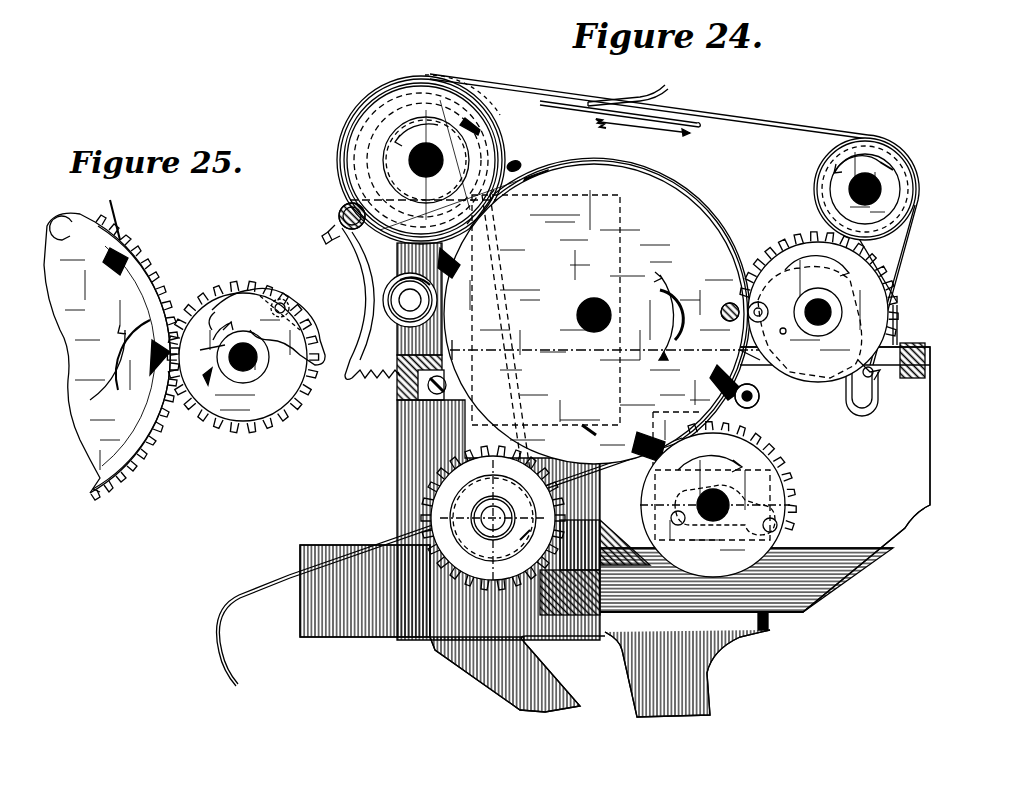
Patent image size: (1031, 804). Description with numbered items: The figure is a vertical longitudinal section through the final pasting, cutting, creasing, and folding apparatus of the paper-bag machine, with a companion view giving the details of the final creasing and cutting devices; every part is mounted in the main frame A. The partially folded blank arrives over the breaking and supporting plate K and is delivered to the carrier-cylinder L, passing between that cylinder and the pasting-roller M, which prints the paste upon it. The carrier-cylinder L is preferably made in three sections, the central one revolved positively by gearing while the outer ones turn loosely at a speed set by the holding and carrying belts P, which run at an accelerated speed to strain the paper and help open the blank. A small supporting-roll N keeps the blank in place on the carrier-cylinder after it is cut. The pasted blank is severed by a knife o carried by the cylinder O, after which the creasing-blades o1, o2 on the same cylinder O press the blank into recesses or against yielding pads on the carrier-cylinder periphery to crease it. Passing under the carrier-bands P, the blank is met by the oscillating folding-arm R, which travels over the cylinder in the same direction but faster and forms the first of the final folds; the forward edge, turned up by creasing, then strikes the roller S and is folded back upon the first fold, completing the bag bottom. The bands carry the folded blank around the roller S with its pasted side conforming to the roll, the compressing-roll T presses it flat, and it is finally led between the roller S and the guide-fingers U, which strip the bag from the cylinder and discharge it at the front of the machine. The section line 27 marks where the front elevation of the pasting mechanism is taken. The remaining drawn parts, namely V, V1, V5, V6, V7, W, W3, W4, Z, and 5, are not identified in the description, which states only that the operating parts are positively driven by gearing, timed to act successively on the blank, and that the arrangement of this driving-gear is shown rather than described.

In FIG. 24, the main frame A is at (615, 480).
In FIG. 24, the holding and carrying belts P is at (722, 105).
In FIG. 24, the breaking and supporting plate K is at (240, 604).
In FIG. 24, the guide-fingers U is at (478, 232).
In FIG. 24, the roller S is at (432, 156).
In FIG. 24, the section line 27 27 is at (410, 160).
In FIG. 24, the oscillating folding-arm R is at (527, 155).
In FIG. 24, the compressing-roll T is at (337, 213).
In FIG. 24, the roller W3 is at (385, 298).
In FIG. 24, the carrier-cylinder L is at (629, 294).
In FIG. 25, the carrier-cylinder L is at (111, 350).
In FIG. 24, the pin W is at (440, 345).
In FIG. 24, the pin 5 is at (589, 432).
In FIG. 24, the pulley Z is at (865, 189).
In FIG. 24, the gear V1 is at (800, 245).
In FIG. 24, the cylinder O is at (805, 323).
In FIG. 25, the cylinder O is at (248, 353).
In FIG. 24, the knife o is at (733, 325).
In FIG. 25, the knife o is at (290, 296).
In FIG. 24, the creasing-blade o1 is at (764, 344).
In FIG. 25, the creasing-blade o1 is at (242, 290).
In FIG. 24, the creasing-blade o2 is at (863, 364).
In FIG. 25, the creasing-blade o2 is at (208, 335).
In FIG. 24, the small supporting-roll N is at (762, 398).
In FIG. 24, the gear V is at (545, 470).
In FIG. 24, the hub W4 is at (495, 484).
In FIG. 24, the gear V6 is at (770, 455).
In FIG. 24, the pasting-roller M is at (724, 502).
In FIG. 25, the toothed segment V5 is at (150, 440).
In FIG. 25, the gear V7 is at (305, 405).